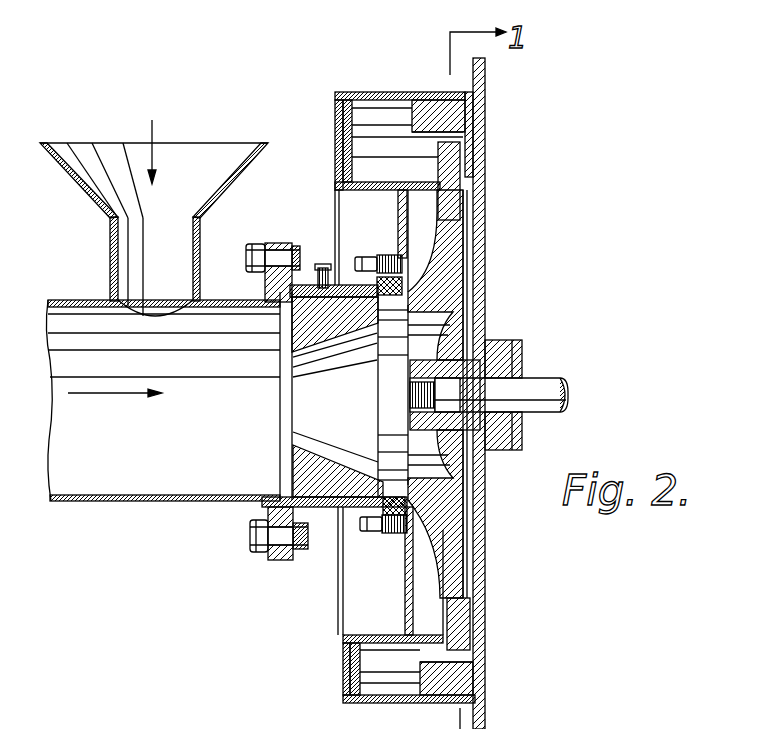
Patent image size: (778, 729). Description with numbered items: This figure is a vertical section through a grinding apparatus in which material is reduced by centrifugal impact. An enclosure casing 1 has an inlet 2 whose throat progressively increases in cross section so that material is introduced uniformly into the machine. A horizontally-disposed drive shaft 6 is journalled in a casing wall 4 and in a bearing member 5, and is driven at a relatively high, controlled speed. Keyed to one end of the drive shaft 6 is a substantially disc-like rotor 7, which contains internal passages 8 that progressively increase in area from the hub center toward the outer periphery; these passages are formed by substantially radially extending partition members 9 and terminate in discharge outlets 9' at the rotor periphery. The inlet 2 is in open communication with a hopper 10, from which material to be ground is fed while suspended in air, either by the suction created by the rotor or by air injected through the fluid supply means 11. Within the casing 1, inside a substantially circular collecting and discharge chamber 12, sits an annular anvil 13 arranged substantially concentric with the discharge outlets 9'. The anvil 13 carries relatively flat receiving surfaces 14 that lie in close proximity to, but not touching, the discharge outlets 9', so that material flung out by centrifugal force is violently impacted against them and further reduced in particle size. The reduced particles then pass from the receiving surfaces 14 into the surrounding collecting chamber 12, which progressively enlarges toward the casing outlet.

The enclosure casing 1 is at (380, 92).
The casing inlet 2 is at (325, 401).
The casing wall 4 is at (485, 262).
The bearing member 5 is at (523, 357).
The drive shaft 6 is at (572, 398).
The rotor 7 is at (470, 218).
The internal passages 8 is at (470, 183).
The partition members 9 is at (458, 420).
The discharge outlets 9' is at (481, 396).
The hopper 10 is at (192, 153).
The fluid supply means 11 is at (97, 472).
The collecting and discharge chamber 12 is at (365, 130).
The anvil 13 is at (432, 104).
The receiving surfaces 14 is at (425, 134).